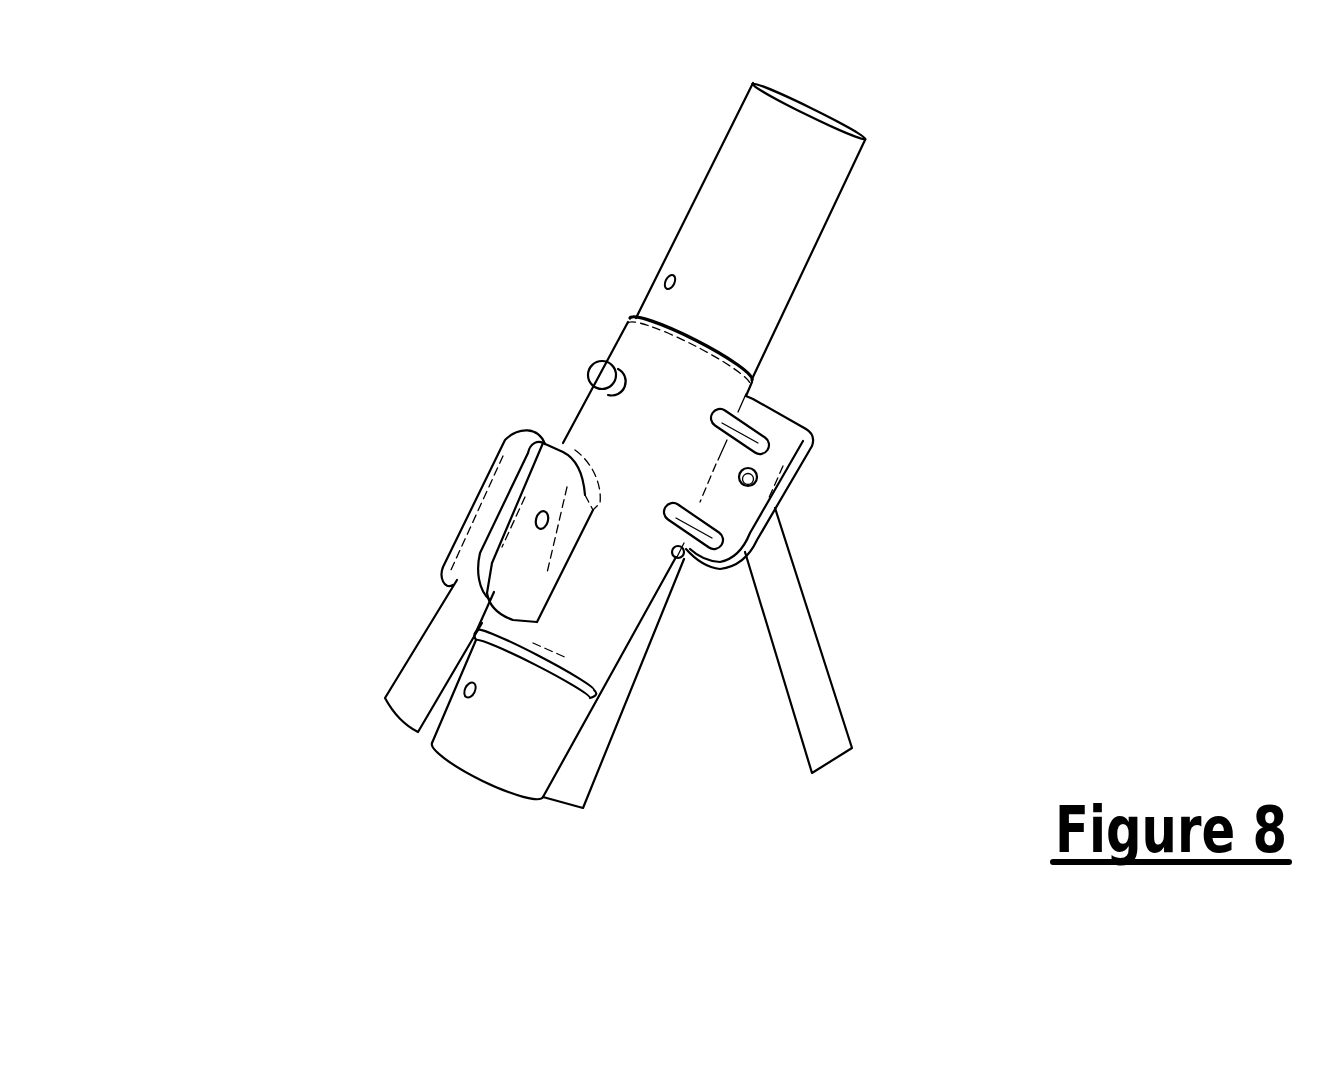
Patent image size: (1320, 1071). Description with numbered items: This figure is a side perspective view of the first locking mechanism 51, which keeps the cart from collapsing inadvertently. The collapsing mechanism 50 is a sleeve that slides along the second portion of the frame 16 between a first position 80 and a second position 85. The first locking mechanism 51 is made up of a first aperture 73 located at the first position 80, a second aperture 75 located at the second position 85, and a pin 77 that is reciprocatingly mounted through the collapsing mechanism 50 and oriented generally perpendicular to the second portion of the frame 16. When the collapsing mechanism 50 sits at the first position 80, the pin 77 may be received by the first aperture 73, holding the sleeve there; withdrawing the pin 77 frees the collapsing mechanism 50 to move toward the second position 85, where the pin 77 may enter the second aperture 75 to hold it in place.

The second portion of the frame 16 is at (793, 286).
The collapsing mechanism 50 is at (660, 475).
The first locking mechanism 51 is at (602, 275).
The first aperture 73 is at (466, 689).
The second aperture 75 is at (664, 279).
The pin 77 is at (600, 362).
The first position 80 is at (643, 790).
The second position 85 is at (908, 177).